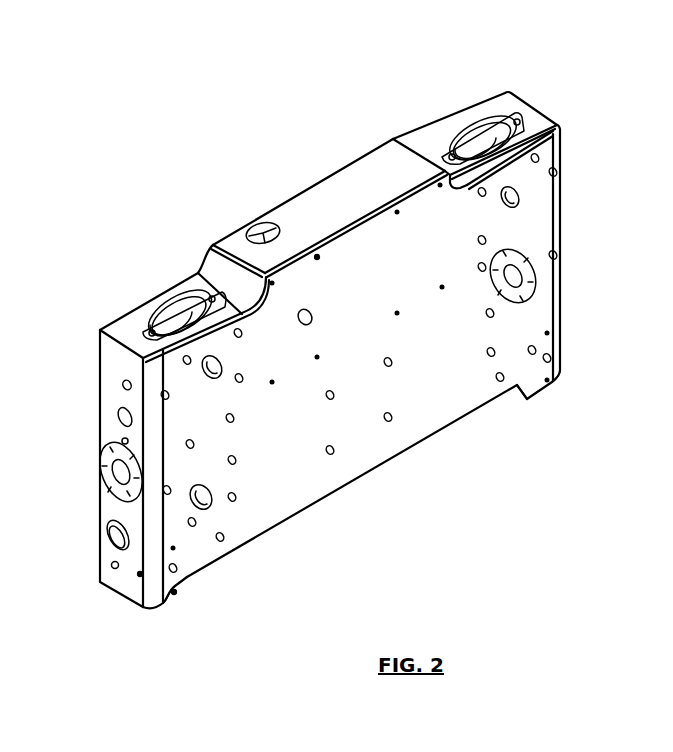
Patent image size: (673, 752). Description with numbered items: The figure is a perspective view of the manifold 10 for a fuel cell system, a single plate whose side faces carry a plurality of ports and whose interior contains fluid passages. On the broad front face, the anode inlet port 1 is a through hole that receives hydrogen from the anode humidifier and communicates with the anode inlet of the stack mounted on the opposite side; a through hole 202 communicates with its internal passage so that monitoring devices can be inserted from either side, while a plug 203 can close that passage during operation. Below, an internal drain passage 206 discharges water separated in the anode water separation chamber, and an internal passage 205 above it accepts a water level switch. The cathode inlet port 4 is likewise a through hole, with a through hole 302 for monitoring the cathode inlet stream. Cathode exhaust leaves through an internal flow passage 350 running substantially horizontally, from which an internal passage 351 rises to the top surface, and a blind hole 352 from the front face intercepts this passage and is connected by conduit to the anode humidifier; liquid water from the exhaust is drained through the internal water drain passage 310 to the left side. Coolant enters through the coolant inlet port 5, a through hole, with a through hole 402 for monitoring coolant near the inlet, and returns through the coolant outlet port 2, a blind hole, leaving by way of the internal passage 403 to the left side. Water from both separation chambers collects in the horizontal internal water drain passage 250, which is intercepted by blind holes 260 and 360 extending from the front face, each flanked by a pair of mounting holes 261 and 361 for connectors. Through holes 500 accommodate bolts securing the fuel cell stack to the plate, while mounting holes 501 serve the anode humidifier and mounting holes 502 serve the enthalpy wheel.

The manifold 10 is at (243, 80).
The anode inlet port 1 is at (205, 372).
The coolant outlet port 2 is at (207, 499).
The cathode inlet port 4 is at (520, 202).
The coolant inlet port 5 is at (556, 311).
The through hole 202 is at (170, 397).
The plug 203 is at (123, 386).
The internal passage 205 is at (120, 416).
The internal drain passage 206 is at (122, 441).
The internal water drain passage 250 is at (140, 577).
The blind hole 260 is at (165, 586).
The mounting holes 261 is at (180, 588).
The through hole 302 is at (555, 172).
The internal water drain passage 310 is at (113, 566).
The internal flow passage 350 is at (110, 532).
The internal passage 351 is at (258, 226).
The blind hole 352 is at (309, 315).
The blind hole 360 is at (556, 358).
The mounting holes 361 is at (538, 393).
The through hole 402 is at (556, 256).
The internal passage 403 is at (109, 469).
The through holes 500 is at (236, 497).
The mounting holes 501 is at (318, 256).
The mounting holes 502 is at (390, 420).